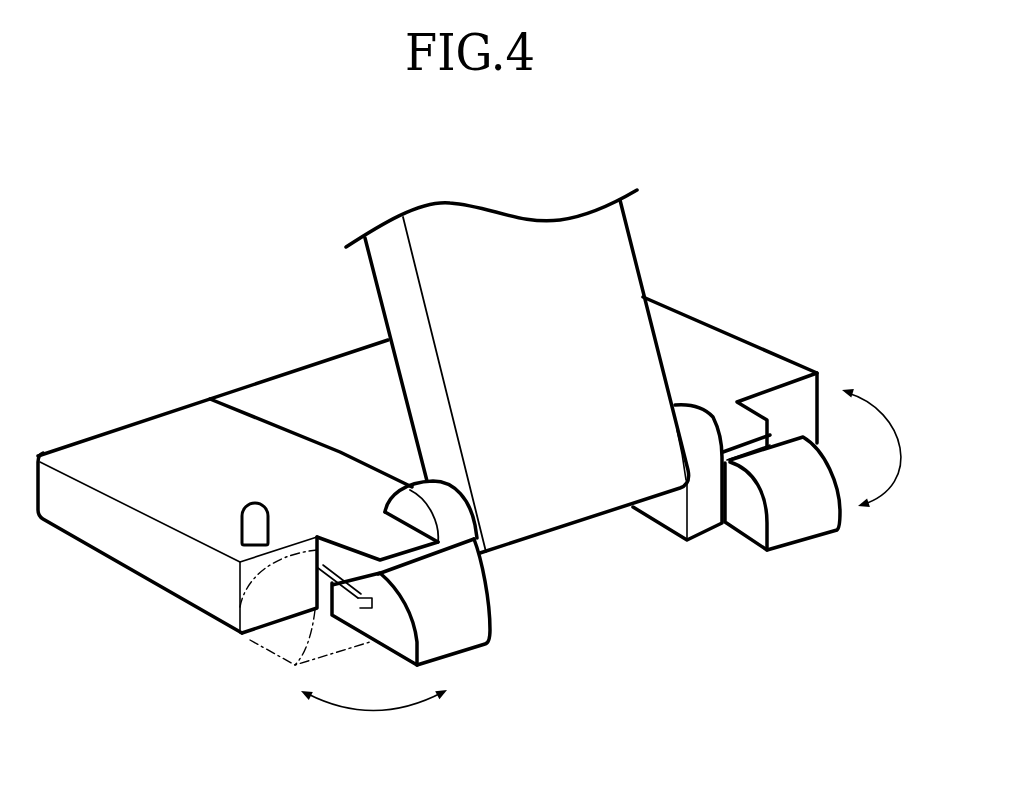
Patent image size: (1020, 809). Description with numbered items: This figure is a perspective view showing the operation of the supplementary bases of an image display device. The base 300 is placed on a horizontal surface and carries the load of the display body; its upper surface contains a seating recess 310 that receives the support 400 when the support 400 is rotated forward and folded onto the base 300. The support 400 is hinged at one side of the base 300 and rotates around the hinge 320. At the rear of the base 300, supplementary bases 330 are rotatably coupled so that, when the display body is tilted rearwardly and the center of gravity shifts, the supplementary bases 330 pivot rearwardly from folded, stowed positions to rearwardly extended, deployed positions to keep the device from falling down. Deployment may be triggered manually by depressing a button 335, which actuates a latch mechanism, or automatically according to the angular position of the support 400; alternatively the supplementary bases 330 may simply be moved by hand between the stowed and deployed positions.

The base 300 is at (762, 328).
The seating recess 310 is at (308, 388).
The hinge 320 is at (460, 518).
The supplementary base 330 is at (457, 638).
The button 335 is at (250, 525).
The support 400 is at (645, 233).